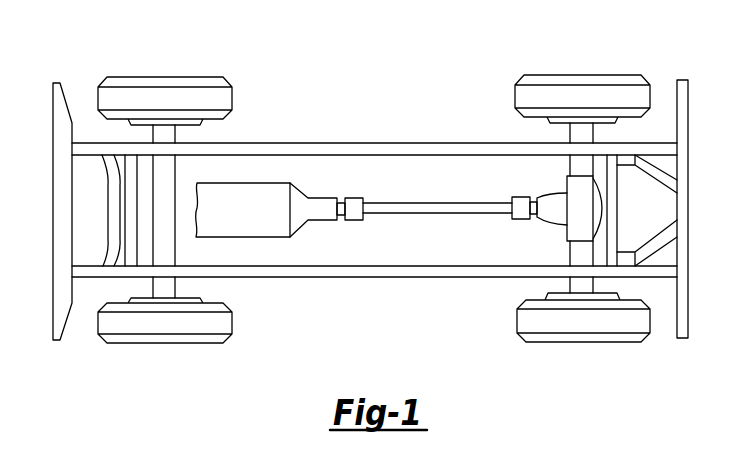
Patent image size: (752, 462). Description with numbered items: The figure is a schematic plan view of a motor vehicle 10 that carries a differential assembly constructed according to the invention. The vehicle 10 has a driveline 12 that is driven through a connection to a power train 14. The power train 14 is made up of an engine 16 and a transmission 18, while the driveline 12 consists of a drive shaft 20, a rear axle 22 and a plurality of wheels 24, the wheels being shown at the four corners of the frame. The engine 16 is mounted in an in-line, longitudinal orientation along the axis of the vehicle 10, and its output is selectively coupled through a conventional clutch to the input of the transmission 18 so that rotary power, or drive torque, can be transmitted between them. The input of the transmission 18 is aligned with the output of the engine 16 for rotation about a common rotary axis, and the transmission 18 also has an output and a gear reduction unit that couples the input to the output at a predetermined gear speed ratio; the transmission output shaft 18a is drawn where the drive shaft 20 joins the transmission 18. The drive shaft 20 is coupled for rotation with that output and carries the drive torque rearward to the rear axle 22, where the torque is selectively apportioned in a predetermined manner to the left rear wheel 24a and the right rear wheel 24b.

The vehicle 10 is at (327, 82).
The driveline 12 is at (530, 182).
The power train 14 is at (254, 260).
The engine 16 is at (239, 216).
The transmission 18 is at (298, 203).
The transmission output shaft 18a is at (340, 213).
The drive shaft 20 is at (413, 208).
The rear axle 22 is at (550, 238).
The wheels 24 is at (138, 357).
The left rear wheel 24a is at (528, 317).
The right rear wheel 24b is at (580, 88).